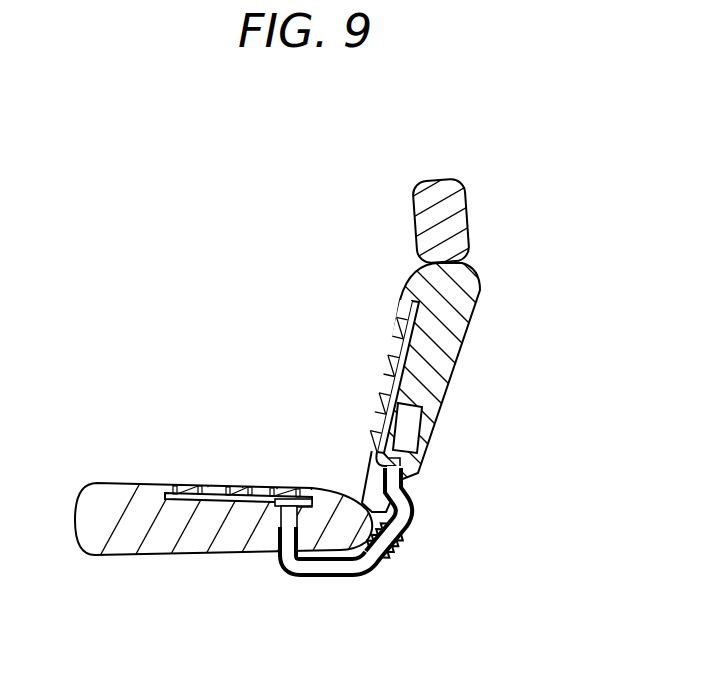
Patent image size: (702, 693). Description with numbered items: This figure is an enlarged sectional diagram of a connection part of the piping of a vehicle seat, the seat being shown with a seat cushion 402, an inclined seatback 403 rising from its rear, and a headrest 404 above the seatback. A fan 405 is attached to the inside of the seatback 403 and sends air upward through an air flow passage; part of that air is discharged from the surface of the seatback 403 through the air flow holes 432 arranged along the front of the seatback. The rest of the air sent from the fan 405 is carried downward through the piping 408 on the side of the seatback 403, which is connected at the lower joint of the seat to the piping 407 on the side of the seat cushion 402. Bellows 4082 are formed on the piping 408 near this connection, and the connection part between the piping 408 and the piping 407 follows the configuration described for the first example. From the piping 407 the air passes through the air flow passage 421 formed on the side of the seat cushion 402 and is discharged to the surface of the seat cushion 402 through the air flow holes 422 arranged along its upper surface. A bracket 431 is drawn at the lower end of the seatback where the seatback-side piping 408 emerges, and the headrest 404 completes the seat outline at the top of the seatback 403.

The seat cushion 402 is at (123, 497).
The seatback 403 is at (456, 330).
The headrest 404 is at (471, 221).
The fan 405 is at (412, 427).
The piping 407 is at (322, 577).
The piping 408 is at (414, 508).
The bellows 4082 is at (406, 542).
The air flow passage 421 is at (281, 516).
The air flow holes 422 is at (203, 490).
The seat back bracket 431 is at (401, 463).
The air flow holes 432 is at (376, 410).